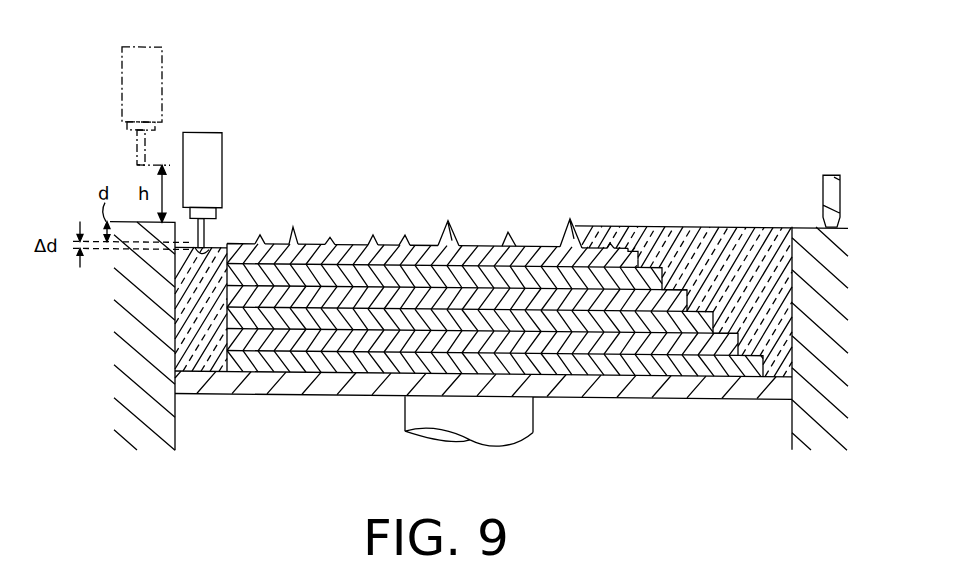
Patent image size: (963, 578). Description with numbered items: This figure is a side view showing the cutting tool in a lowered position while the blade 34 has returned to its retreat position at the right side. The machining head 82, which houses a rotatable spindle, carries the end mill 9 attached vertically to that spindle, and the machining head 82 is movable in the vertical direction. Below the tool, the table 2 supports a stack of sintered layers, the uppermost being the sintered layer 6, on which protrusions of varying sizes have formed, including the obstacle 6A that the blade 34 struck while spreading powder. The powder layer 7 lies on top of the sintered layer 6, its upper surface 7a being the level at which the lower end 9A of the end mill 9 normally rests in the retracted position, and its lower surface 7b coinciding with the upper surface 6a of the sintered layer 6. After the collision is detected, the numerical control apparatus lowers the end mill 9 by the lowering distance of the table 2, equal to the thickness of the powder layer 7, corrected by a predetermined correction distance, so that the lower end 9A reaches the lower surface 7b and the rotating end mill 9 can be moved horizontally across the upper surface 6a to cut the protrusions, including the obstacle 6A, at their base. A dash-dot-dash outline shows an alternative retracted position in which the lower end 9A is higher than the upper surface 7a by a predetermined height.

The machining head 82 is at (196, 147).
The end mill 9 is at (207, 230).
The lower end of the end mill 9A is at (214, 234).
The sintered layer 6 is at (650, 253).
The obstacle 6A is at (445, 228).
The upper surface of the sintered layer 6a is at (477, 245).
The upper surface of the powder layer 7a is at (584, 217).
The powder layer 7 is at (594, 237).
The lower surface of the powder layer 7b is at (640, 250).
The table 2 is at (338, 385).
The blade 34 is at (831, 175).